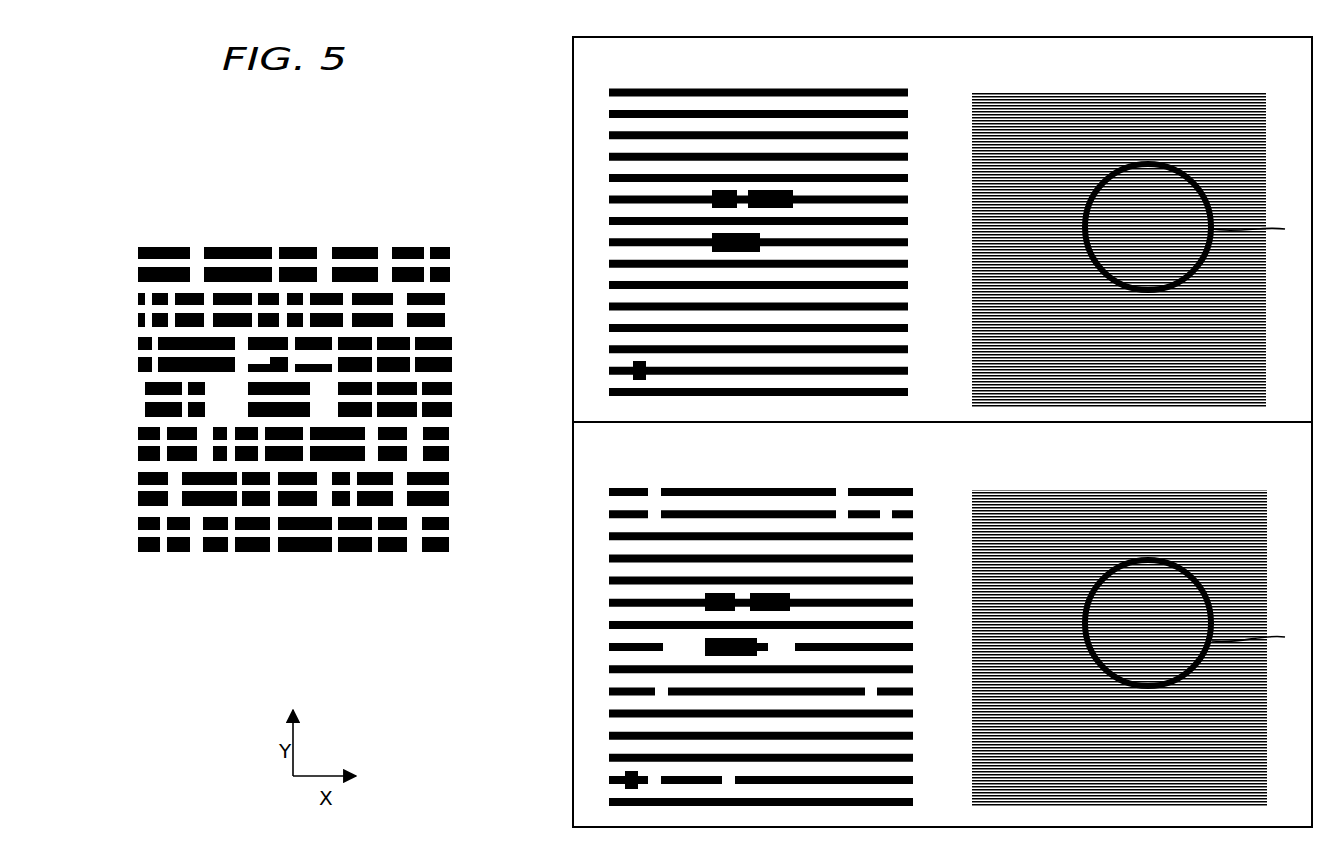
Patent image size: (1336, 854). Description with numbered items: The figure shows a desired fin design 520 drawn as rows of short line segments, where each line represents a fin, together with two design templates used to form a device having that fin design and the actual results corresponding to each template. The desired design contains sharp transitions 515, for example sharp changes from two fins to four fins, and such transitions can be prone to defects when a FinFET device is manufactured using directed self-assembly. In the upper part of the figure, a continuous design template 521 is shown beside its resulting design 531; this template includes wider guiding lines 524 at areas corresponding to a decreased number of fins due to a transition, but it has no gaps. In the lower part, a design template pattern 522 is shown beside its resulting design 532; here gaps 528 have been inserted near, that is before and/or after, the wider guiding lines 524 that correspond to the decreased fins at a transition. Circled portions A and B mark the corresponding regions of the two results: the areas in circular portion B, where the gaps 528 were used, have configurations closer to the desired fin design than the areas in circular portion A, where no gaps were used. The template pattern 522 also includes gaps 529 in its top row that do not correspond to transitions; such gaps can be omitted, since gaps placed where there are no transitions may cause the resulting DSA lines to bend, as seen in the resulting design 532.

The sharp transition 515 is at (298, 407).
The line pattern image 520 is at (270, 372).
The continuous design template 521 is at (741, 419).
The design template pattern 522 is at (742, 621).
The wider guiding lines 524 is at (760, 246).
The gaps 528 is at (685, 646).
The gaps 529 is at (655, 488).
The resulting design 531 is at (1200, 80).
The resulting design 532 is at (1205, 485).